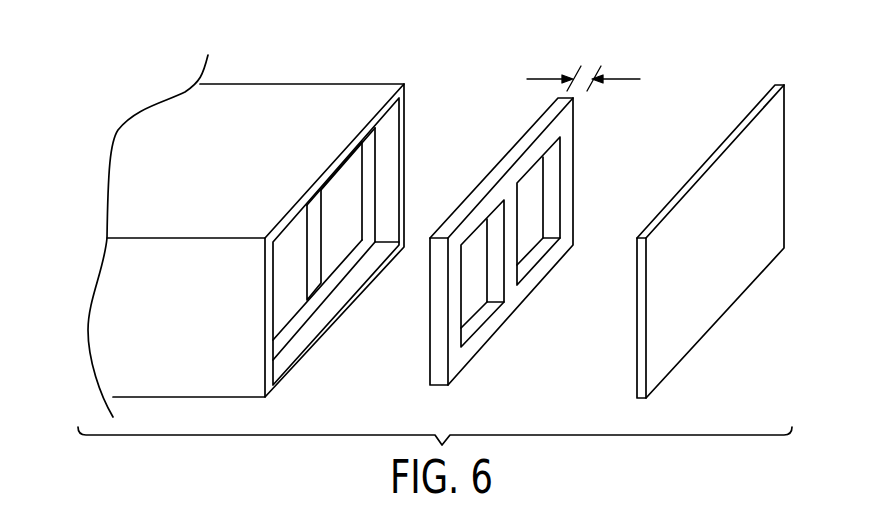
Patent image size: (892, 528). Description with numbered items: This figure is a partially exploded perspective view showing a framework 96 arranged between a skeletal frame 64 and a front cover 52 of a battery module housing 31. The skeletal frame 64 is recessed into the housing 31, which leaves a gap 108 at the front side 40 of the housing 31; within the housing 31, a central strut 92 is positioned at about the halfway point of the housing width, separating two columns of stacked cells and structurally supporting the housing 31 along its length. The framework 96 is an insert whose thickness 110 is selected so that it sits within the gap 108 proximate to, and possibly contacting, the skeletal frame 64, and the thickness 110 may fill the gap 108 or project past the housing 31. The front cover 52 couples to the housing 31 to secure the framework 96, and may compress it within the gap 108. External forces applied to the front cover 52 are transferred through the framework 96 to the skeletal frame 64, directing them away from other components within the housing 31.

The housing 31 is at (290, 100).
The front side 40 is at (355, 301).
The front cover 52 is at (757, 106).
The skeletal frame 64 is at (376, 163).
The central strut 92 is at (307, 250).
The framework 96 is at (508, 153).
The gap 108 is at (365, 254).
The thickness 110 is at (628, 79).